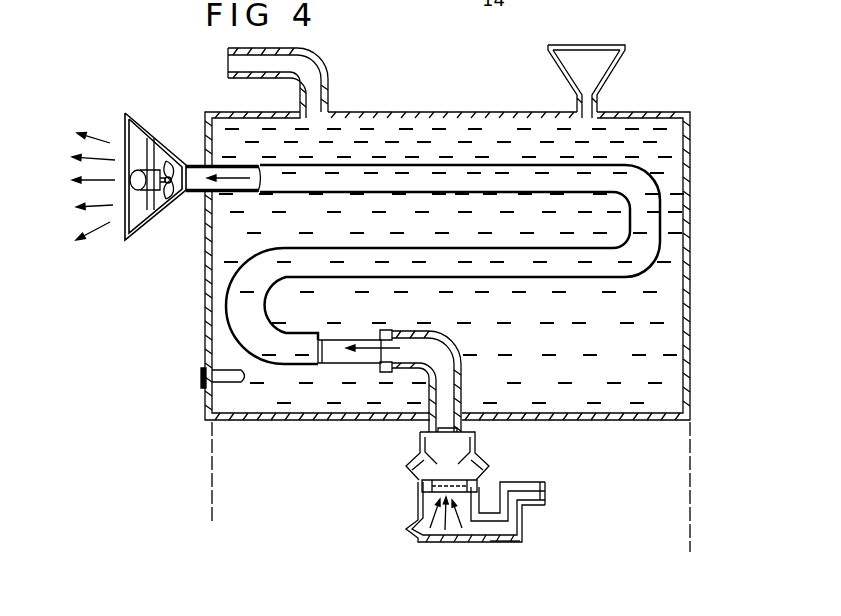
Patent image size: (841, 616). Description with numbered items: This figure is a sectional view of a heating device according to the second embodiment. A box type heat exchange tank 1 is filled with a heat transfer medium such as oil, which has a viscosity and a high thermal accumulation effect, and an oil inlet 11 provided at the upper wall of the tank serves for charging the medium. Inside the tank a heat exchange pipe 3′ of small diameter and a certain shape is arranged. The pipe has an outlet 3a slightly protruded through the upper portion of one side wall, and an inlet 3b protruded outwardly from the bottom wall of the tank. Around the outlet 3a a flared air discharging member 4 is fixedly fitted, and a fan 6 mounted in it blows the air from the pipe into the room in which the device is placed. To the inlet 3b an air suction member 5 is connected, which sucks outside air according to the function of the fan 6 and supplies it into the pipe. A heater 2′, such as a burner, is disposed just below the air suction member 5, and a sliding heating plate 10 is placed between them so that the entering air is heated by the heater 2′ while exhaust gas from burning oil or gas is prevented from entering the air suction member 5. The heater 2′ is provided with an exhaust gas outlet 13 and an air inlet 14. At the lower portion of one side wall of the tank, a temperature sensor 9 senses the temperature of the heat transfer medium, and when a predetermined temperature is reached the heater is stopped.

The heat exchange tank 1 is at (690, 218).
The oil inlet 11 is at (625, 56).
The heat exchange pipe 3′ is at (586, 279).
The outlet 3a is at (190, 163).
The inlet 3b is at (437, 425).
The fan 6 is at (125, 212).
The air discharging member 4 is at (150, 210).
The temperature sensor 9 is at (202, 380).
The air suction member 5 is at (406, 470).
The air inlet 14 is at (407, 536).
The sliding heating plate 10 is at (413, 508).
The exhaust gas outlet 13 is at (534, 482).
The heater 2′ is at (506, 556).